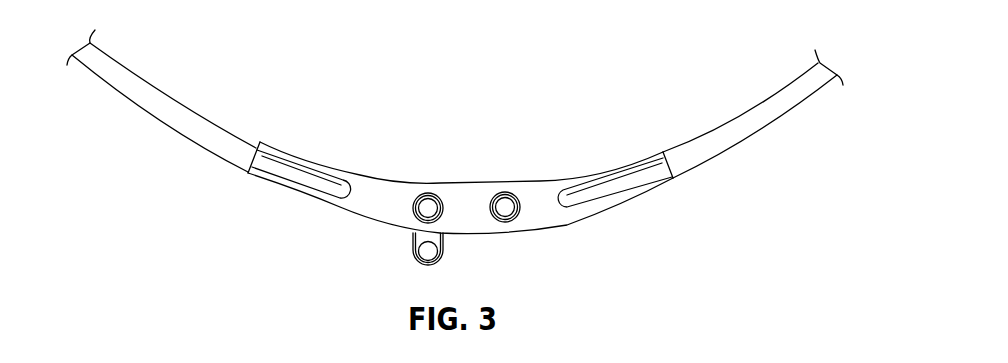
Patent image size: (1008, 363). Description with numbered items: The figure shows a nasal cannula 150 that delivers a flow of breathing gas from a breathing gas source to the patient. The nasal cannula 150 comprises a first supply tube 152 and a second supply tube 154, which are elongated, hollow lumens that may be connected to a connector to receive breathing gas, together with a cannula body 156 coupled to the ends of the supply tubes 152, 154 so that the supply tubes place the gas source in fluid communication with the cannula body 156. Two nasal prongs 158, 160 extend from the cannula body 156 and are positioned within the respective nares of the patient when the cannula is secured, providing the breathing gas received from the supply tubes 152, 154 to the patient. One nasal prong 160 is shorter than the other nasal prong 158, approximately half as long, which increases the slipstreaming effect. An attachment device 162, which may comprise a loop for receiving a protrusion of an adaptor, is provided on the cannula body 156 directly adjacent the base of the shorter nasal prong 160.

The nasal cannula 150 is at (375, 176).
The first supply tube 152 is at (133, 100).
The second supply tube 154 is at (767, 125).
The cannula body 156 is at (602, 175).
The nasal prong 158 is at (504, 192).
The nasal prong 160 is at (433, 195).
The attachment device 162 is at (412, 247).